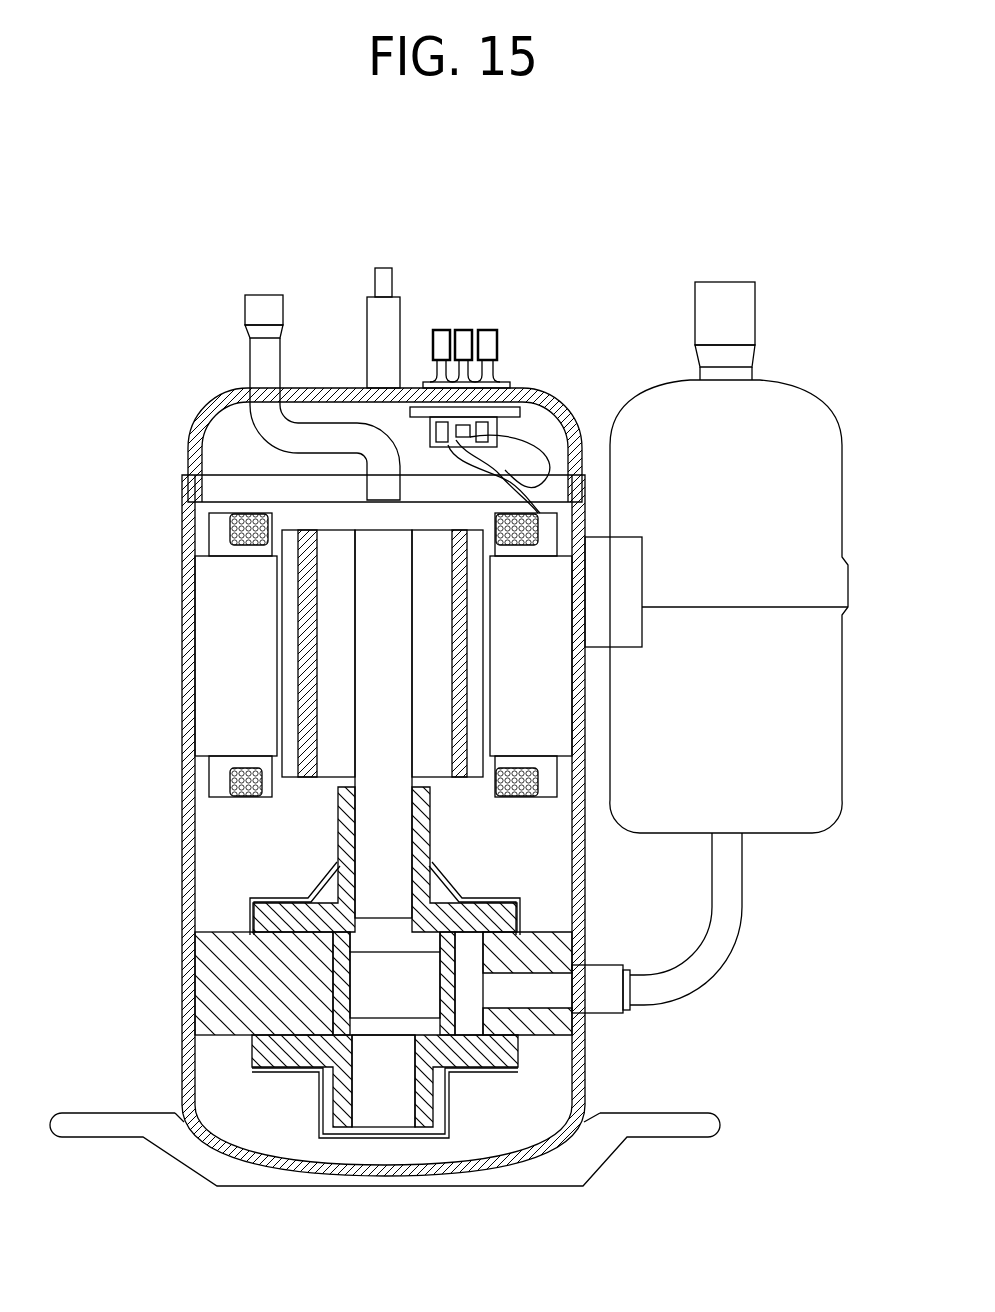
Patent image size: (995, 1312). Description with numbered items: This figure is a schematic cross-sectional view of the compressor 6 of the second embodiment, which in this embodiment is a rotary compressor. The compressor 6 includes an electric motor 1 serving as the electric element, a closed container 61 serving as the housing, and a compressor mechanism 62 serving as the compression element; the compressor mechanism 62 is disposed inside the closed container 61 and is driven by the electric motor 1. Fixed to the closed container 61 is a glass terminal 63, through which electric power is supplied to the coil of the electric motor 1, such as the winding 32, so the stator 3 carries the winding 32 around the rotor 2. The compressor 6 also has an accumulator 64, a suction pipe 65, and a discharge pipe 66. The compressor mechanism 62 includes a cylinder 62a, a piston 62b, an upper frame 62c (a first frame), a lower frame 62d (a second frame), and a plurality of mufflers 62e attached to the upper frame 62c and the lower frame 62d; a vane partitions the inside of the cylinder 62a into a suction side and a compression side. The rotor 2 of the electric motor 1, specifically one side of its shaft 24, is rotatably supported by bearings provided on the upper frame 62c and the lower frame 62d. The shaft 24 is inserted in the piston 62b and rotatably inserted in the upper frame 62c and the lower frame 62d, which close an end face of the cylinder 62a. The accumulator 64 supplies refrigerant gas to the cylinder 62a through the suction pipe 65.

The compressor 6 is at (183, 203).
The electric motor 1 is at (279, 500).
The rotor 2 is at (302, 780).
The stator 3 is at (221, 811).
The shaft 24 is at (383, 546).
The winding 32 is at (249, 800).
The closed container 61 is at (182, 507).
The compressor mechanism 62 is at (300, 1088).
The cylinder 62a is at (222, 931).
The piston 62b is at (333, 980).
The upper frame 62c is at (480, 901).
The lower frame 62d is at (477, 1052).
The mufflers 62e is at (320, 889).
The glass terminal 63 is at (498, 340).
The accumulator 64 is at (815, 400).
The suction pipe 65 is at (724, 967).
The discharge pipe 66 is at (282, 366).